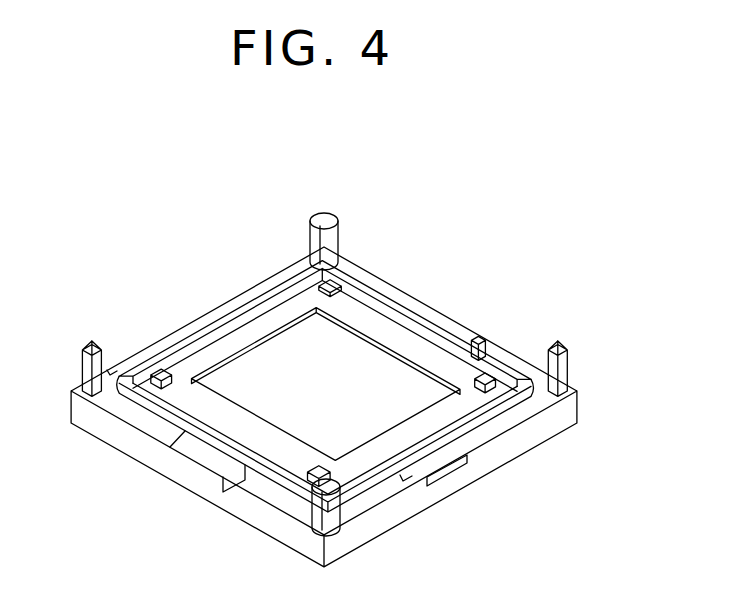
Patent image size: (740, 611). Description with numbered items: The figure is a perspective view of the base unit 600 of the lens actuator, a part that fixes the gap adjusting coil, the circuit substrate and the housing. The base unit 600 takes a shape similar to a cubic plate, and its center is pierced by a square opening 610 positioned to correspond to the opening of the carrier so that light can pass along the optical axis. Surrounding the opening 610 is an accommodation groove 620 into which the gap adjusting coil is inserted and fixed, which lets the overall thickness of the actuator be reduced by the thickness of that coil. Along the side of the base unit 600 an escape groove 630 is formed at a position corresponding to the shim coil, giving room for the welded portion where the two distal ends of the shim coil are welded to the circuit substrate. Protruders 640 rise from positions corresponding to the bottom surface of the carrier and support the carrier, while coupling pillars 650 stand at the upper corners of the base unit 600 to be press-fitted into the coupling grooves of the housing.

The base unit 600 is at (160, 487).
The opening 610 is at (353, 420).
The accommodation groove 620 is at (440, 442).
The escape groove 630 is at (487, 362).
The protruders 640 is at (300, 297).
The coupling pillars 650 is at (564, 347).